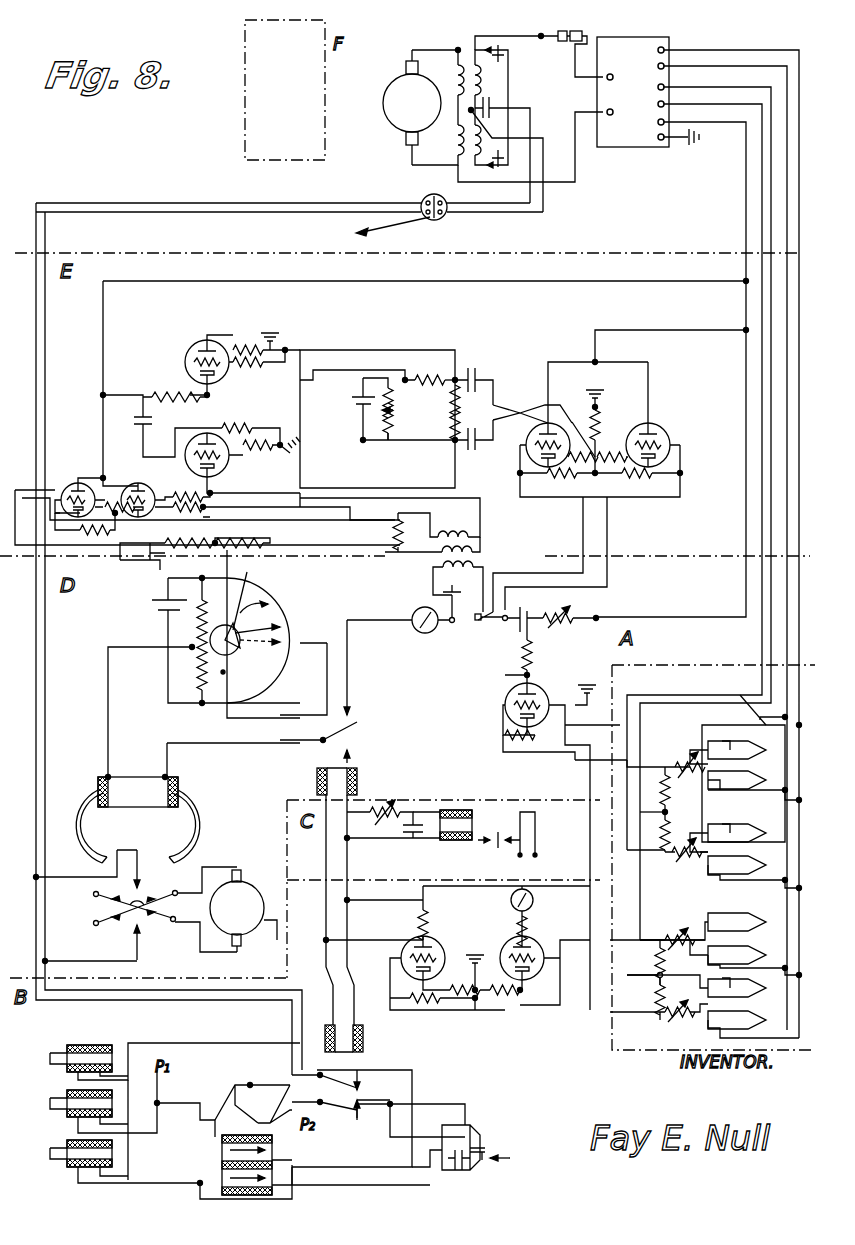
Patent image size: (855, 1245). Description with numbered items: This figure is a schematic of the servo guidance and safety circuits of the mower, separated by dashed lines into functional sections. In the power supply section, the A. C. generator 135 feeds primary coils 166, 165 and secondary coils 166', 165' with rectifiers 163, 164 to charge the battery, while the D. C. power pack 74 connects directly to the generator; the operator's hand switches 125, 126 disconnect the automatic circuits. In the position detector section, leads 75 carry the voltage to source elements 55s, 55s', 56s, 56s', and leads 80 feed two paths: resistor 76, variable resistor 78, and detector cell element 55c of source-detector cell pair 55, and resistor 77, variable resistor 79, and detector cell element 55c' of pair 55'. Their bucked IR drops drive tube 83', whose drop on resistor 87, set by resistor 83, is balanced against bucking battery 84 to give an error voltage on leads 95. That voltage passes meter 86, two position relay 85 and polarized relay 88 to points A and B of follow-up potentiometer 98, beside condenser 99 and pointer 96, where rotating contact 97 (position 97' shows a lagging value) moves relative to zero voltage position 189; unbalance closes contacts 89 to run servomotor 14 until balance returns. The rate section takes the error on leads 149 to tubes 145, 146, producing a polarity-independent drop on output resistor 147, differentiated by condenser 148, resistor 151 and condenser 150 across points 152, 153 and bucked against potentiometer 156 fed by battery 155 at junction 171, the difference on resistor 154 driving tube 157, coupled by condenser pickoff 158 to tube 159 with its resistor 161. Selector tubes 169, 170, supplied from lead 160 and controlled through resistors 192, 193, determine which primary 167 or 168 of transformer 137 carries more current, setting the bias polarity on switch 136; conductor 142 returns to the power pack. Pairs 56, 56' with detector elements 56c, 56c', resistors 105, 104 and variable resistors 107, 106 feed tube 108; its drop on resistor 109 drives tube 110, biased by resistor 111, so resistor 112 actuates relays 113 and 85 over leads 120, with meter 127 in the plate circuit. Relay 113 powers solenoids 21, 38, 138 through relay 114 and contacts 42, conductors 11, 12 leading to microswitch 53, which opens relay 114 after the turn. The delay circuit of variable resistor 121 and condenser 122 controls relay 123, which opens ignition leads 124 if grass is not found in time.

The A. C. generator 135 is at (388, 88).
The primary coil 166 is at (438, 96).
The secondary coil 166' is at (485, 89).
The primary coil 165 is at (413, 150).
The secondary coil 165' is at (442, 168).
The rectifier 163 is at (504, 58).
The rectifier 164 is at (490, 168).
The hand switch 125 is at (541, 36).
The hand switch 126 is at (428, 220).
The D. C. power pack 74 is at (638, 144).
The lead 160 is at (746, 183).
The tube 157 is at (212, 326).
The condenser pickoff 158 is at (154, 419).
The tube 159 is at (243, 467).
The resistor 161 is at (229, 458).
The selector tube 170 is at (66, 483).
The selector tube 169 is at (140, 483).
The battery 155 is at (355, 406).
The potentiometer 156 is at (398, 420).
The junction 171 is at (376, 444).
The resistor 154 is at (418, 376).
The point 152 is at (458, 376).
The point 153 is at (453, 444).
The resistor 151 is at (460, 390).
The condenser 148 is at (480, 372).
The condenser 150 is at (470, 450).
The tube 146 is at (530, 442).
The tube 145 is at (670, 432).
The output resistor 147 is at (605, 417).
The leads 149 is at (597, 510).
The resistor 193 is at (401, 548).
The primary 167 is at (452, 532).
The primary 168 is at (474, 542).
The transformer 137 is at (476, 563).
The resistor 192 is at (264, 548).
The condenser 99 is at (148, 606).
The zero voltage position 189 is at (270, 645).
The pointer 96 is at (250, 598).
The follow-up potentiometer 98 is at (270, 604).
The dotted arrow 97' is at (278, 610).
The rotating contact 97 is at (279, 627).
The meter 86 is at (420, 612).
The leads 95 is at (386, 631).
The switch 136 is at (482, 624).
The bucking battery 84 is at (526, 612).
The resistor 83 is at (571, 626).
The resistor 87 is at (533, 662).
The tube 83' is at (565, 846).
The two position relay 85 is at (360, 735).
The polarized relay 88 is at (100, 777).
The contacts 89 is at (140, 925).
The servomotor 14 is at (229, 909).
The two position relay 113 is at (363, 1036).
The leads 120 is at (333, 938).
The variable resistor 121 is at (387, 806).
The condenser 122 is at (402, 832).
The relay 123 is at (452, 841).
The leads 124 is at (515, 855).
The meter 127 is at (533, 902).
The tube 108 is at (540, 950).
The resistor 112 is at (432, 922).
The tube 110 is at (438, 950).
The resistor 111 is at (462, 1000).
The resistor 109 is at (496, 1000).
The conductor 142 is at (762, 632).
The leads 75 is at (787, 642).
The leads 80 is at (749, 699).
The source element 55s is at (752, 779).
The detector cell element 55c is at (746, 750).
The source-detector cell pair 55 is at (668, 752).
The variable resistor 78 is at (672, 791).
The resistor 76 is at (667, 810).
The resistor 77 is at (673, 833).
The variable resistor 79 is at (676, 857).
The detector cell element 55c' is at (746, 848).
The source element 55s' is at (765, 832).
The source-detector cell pair 55' is at (691, 871).
The source-detector cell pair 56 is at (721, 941).
The detector cell element 56c is at (729, 913).
The source element 56s is at (765, 923).
The variable resistor 107 is at (676, 948).
The resistor 105 is at (660, 958).
The resistor 104 is at (658, 978).
The detector cell element 56c' is at (713, 1001).
The source-detector cell pair 56' is at (700, 990).
The variable resistor 106 is at (690, 1018).
The source element 56s' is at (760, 1022).
The solenoid 138 is at (50, 1056).
The solenoid 38 is at (50, 1102).
The solenoid 21 is at (50, 1152).
The relay 114 is at (200, 1145).
The switch contacts 42 is at (310, 1102).
The conductor 11 is at (408, 1070).
The conductor 12 is at (378, 1104).
The microswitch 53 is at (485, 1118).